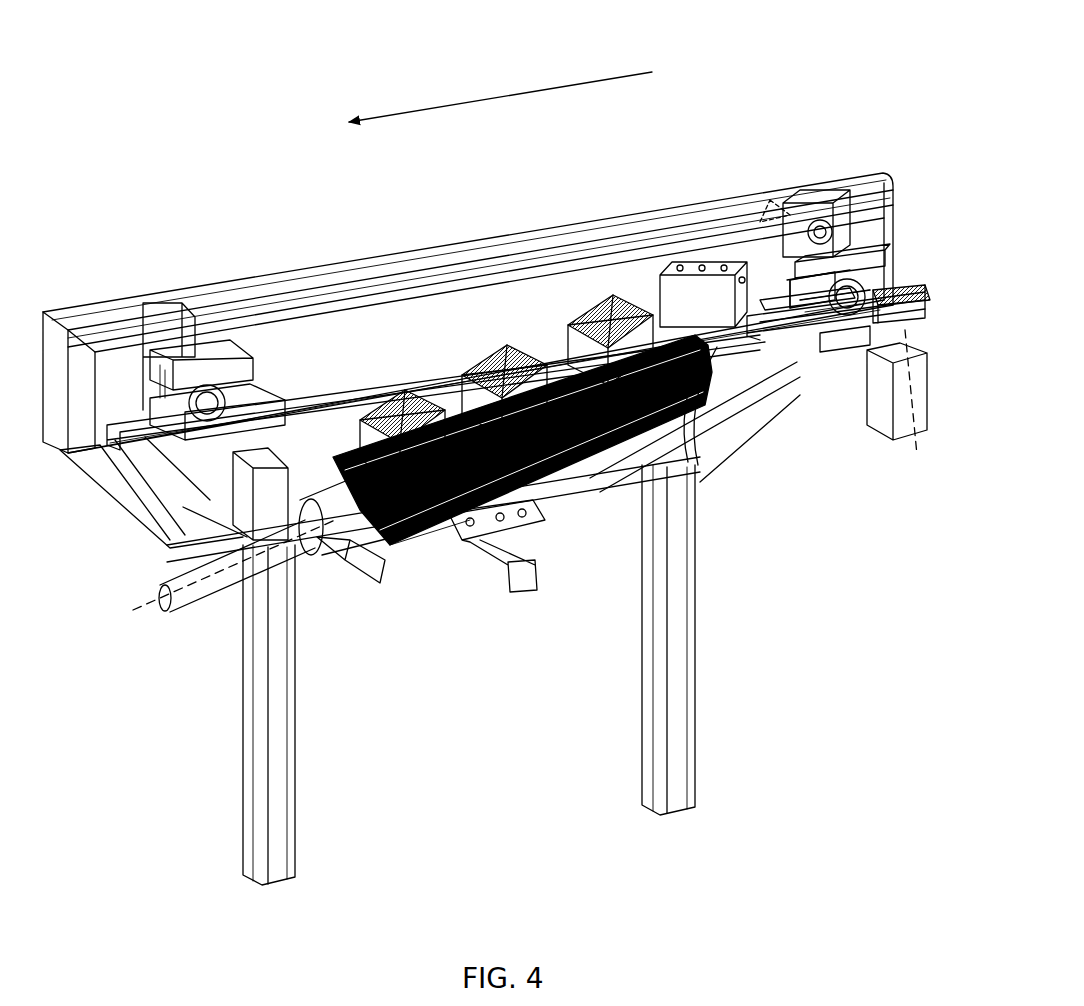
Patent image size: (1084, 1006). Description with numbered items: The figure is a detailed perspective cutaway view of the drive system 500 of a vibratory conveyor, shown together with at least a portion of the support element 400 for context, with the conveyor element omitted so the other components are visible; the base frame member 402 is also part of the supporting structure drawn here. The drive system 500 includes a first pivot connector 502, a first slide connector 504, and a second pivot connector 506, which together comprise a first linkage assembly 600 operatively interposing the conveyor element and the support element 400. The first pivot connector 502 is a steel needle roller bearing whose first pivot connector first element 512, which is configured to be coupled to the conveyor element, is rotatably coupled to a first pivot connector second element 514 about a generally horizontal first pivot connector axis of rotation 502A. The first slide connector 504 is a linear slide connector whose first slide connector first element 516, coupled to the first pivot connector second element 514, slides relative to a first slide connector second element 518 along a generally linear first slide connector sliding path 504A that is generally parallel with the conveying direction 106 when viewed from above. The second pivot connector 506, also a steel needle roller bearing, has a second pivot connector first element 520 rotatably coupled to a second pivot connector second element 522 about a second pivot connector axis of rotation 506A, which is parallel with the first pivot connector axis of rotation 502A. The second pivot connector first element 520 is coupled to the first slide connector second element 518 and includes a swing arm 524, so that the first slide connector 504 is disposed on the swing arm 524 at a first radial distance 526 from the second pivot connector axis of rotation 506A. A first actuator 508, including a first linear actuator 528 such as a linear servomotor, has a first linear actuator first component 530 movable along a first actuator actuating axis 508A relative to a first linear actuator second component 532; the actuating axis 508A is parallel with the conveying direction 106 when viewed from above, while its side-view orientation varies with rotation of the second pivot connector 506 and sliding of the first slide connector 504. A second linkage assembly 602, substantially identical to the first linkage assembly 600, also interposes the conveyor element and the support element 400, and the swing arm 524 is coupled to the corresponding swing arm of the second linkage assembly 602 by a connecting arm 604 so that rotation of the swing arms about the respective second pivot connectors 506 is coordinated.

The drive system 500 is at (160, 153).
The conveying direction 106 is at (492, 97).
The first linkage assembly 600 is at (858, 205).
The second linkage assembly 602 is at (219, 302).
The connecting arm 604 is at (330, 428).
The support element 400 is at (240, 656).
The base frame brace 402 is at (123, 481).
The first actuator 508 is at (551, 341).
The first actuator actuating axis 508A is at (192, 590).
The first linear actuator 528 is at (417, 540).
The first linear actuator second component 532 is at (567, 467).
The first linear actuator first component 530 is at (735, 370).
The first slide connector sliding path 504A is at (712, 315).
The first slide connector 504 is at (826, 342).
The first slide connector first element 516 is at (778, 344).
The first pivot connector 502 is at (848, 342).
The first pivot connector axis of rotation 502A is at (913, 445).
The first slide connector second element 518 is at (856, 354).
The swing arm 524 is at (845, 362).
The first radial distance 526 is at (877, 293).
The second pivot connector 506 is at (812, 212).
The second pivot connector axis of rotation 506A is at (769, 198).
The second pivot connector second element 522 is at (827, 197).
The first pivot connector first element 512 is at (793, 297).
The first pivot connector second element 514 is at (787, 280).
The second pivot connector first element 520 is at (797, 300).